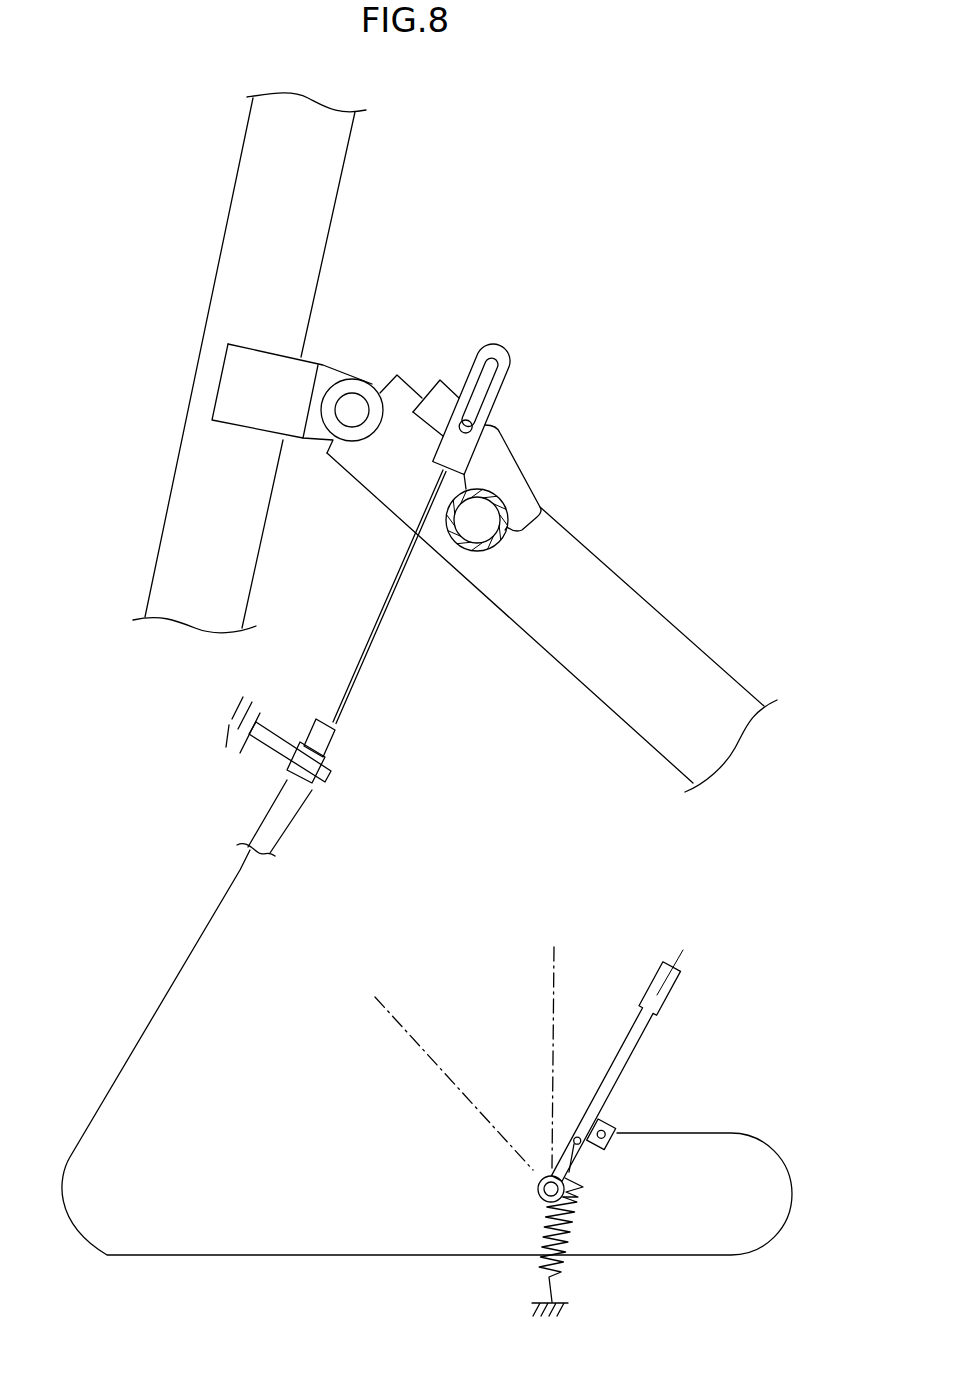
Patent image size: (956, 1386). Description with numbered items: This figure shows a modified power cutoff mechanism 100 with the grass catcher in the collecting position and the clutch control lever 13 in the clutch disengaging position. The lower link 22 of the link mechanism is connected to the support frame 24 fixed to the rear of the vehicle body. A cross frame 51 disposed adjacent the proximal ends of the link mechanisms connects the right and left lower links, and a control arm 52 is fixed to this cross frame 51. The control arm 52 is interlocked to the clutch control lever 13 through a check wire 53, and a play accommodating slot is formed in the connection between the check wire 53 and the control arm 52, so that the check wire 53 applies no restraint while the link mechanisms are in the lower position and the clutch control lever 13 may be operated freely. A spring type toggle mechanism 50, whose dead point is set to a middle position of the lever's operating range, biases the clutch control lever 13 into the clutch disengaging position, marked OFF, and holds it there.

The support frame 24 is at (245, 232).
The lower link 22 is at (622, 692).
The control arm 52 is at (500, 467).
The cross frame 51 is at (472, 549).
The check wire 53 is at (150, 1017).
The power cutoff mechanism 100 is at (355, 841).
The clutch control lever 13 is at (620, 1067).
The spring type toggle mechanism 50 is at (597, 1221).